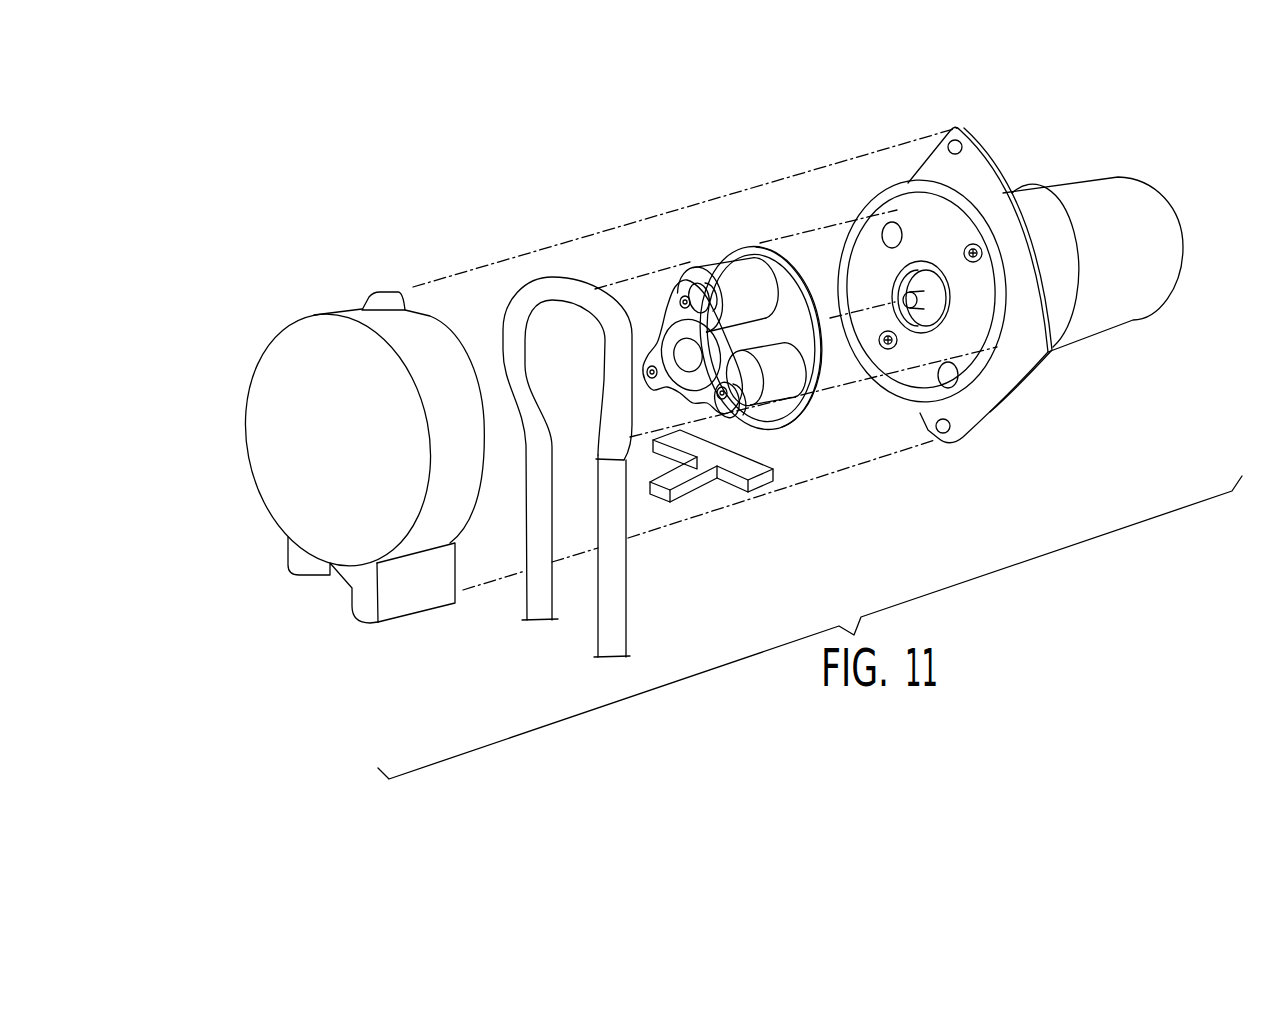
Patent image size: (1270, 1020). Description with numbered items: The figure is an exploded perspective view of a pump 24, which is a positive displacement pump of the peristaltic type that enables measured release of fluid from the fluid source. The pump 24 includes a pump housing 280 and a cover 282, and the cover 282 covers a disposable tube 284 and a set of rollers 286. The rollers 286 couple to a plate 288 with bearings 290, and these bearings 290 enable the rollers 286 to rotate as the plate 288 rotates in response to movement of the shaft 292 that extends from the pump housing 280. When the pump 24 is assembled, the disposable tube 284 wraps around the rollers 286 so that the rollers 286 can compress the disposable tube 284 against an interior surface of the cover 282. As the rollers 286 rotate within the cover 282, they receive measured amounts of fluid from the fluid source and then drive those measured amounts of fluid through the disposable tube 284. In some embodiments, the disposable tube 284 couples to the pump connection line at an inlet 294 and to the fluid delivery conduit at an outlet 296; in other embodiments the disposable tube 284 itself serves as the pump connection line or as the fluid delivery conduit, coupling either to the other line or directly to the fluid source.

The pump 24 is at (1162, 130).
The pump housing 280 is at (1113, 305).
The cover 282 is at (280, 435).
The disposable tube 284 is at (595, 444).
The rollers 286 is at (727, 275).
The plate 288 is at (792, 275).
The bearings 290 is at (650, 370).
The shaft 292 is at (925, 297).
The inlet 294 is at (537, 598).
The outlet 296 is at (611, 598).